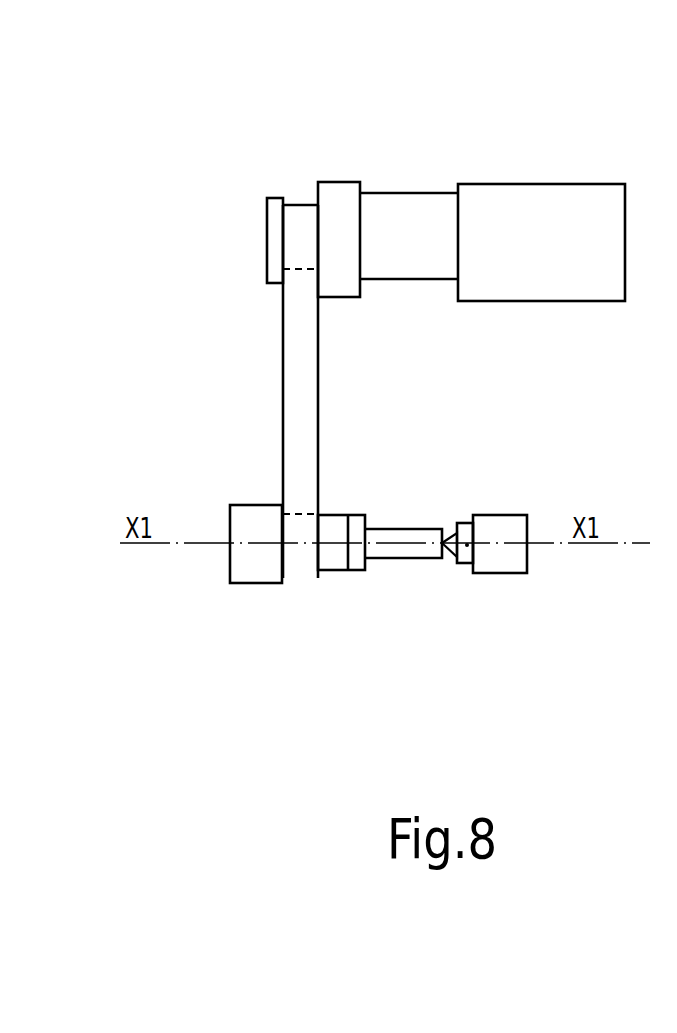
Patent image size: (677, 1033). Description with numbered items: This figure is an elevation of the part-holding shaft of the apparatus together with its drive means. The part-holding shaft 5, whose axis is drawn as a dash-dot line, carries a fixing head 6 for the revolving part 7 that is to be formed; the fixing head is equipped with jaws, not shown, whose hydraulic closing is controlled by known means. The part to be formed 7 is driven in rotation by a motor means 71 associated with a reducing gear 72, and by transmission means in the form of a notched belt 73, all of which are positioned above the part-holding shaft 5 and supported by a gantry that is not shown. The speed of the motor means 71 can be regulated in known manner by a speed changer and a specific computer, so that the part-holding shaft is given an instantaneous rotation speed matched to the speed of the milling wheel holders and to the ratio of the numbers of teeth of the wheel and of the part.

The motor means 71 is at (559, 222).
The reducing gear 72 is at (412, 222).
The notched belt 73 is at (302, 392).
The part-holding shaft 5 is at (330, 571).
The fixing head 6 is at (357, 553).
The revolving part 7 is at (418, 549).